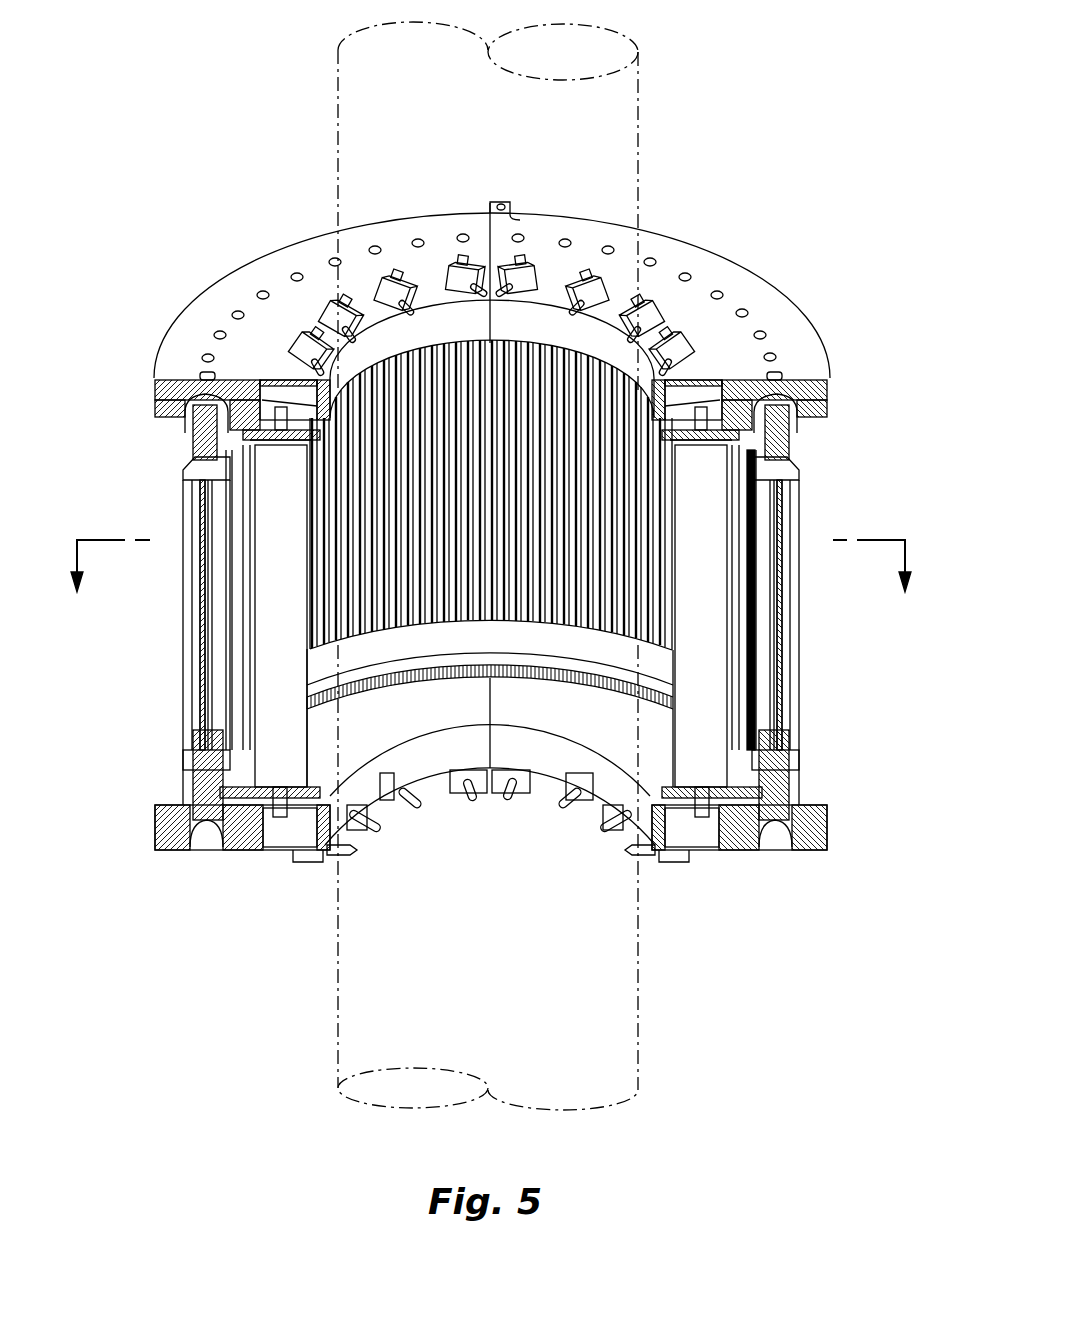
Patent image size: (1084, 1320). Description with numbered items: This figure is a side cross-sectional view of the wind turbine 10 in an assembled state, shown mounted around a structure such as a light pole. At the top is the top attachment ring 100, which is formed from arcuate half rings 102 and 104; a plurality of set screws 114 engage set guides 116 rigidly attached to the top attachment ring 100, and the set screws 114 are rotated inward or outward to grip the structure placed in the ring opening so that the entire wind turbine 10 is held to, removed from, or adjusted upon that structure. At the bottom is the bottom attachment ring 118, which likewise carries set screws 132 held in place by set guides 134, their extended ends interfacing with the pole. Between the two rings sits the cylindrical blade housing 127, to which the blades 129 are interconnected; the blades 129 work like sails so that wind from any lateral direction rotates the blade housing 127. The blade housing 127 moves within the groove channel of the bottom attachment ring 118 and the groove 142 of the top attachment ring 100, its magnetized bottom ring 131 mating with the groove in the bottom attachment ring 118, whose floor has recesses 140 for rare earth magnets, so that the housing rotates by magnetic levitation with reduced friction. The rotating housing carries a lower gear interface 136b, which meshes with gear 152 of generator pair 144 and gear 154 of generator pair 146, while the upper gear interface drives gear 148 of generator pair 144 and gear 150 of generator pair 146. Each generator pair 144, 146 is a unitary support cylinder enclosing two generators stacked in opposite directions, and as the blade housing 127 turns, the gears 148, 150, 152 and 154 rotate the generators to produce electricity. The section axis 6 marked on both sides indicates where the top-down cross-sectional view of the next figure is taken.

The wind turbine 10 is at (795, 266).
The top attachment ring 100 is at (830, 380).
The arcuate half ring 102 is at (697, 262).
The arcuate half ring 104 is at (203, 308).
The set screw 114 is at (297, 333).
The set guide 116 is at (262, 353).
The bottom attachment ring 118 is at (175, 847).
The blade housing 127 is at (788, 757).
The wind turbine blade 129 is at (172, 645).
The bottom ring 131 is at (535, 640).
The set screw 132 is at (470, 795).
The set guide 134 is at (448, 787).
The lower gear interface 136b is at (375, 685).
The recess 140 is at (220, 837).
The groove 142 is at (187, 423).
The generator pair 144 is at (268, 711).
The generator pair 146 is at (707, 718).
The gear 148 is at (185, 463).
The gear 150 is at (793, 449).
The gear 152 is at (250, 843).
The gear 154 is at (725, 807).
The section axis 6- 6 is at (490, 584).